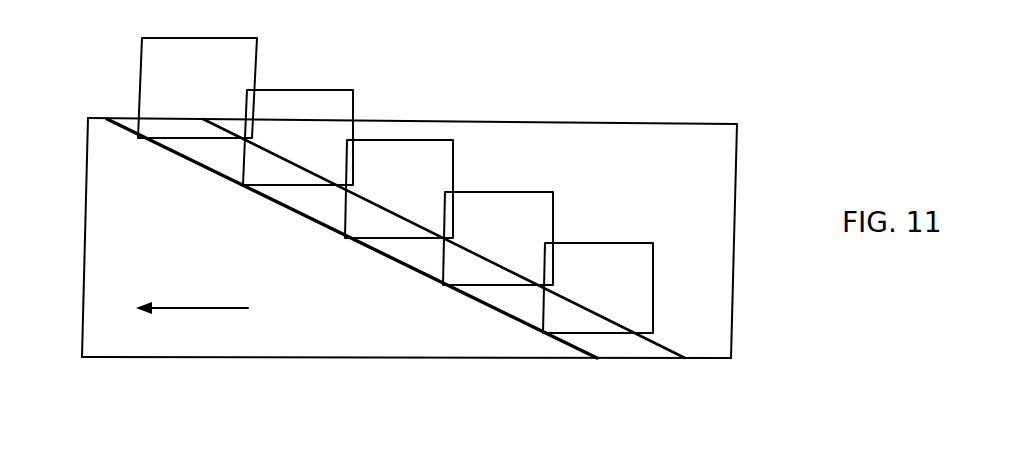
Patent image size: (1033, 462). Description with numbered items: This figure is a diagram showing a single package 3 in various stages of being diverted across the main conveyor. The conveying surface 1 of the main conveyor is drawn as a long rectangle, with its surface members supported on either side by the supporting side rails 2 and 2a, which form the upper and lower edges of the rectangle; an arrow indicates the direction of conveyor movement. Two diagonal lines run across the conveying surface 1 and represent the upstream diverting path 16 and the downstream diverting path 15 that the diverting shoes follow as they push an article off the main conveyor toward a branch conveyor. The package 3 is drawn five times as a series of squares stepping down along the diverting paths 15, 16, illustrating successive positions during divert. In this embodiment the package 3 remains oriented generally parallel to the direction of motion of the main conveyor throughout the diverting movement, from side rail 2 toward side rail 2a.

The conveying surface 1 is at (300, 315).
The supporting side rail 2 is at (700, 123).
The supporting side rail 2a is at (713, 360).
The package 3 is at (543, 332).
The downstream diverting path 15 is at (396, 286).
The upstream diverting path 16 is at (407, 217).